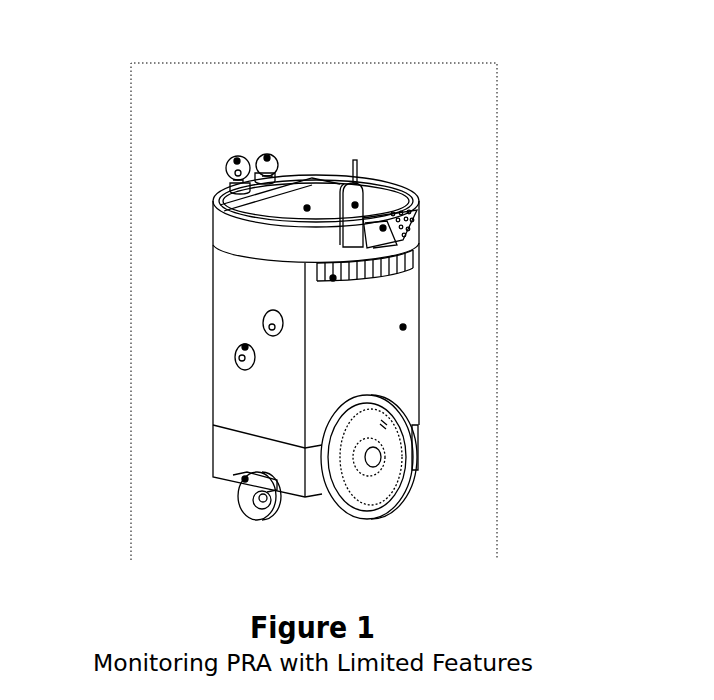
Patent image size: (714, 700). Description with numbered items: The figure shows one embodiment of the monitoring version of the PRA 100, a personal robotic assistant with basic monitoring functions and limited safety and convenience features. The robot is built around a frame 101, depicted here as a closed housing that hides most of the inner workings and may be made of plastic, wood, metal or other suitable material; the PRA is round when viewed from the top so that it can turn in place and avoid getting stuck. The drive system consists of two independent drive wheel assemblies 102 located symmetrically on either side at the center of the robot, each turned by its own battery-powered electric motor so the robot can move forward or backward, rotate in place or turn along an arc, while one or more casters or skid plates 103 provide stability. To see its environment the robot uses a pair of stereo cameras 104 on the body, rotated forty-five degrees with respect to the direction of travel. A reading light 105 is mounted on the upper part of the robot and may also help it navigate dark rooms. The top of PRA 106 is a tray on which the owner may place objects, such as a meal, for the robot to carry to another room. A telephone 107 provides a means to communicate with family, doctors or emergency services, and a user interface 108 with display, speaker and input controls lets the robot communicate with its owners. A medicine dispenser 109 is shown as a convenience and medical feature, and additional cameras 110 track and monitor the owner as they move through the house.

The PRA 100 is at (290, 281).
The frame 101 is at (403, 327).
The drive wheel assemblies 102 is at (442, 493).
The casters or skid plates 103 is at (245, 479).
The stereo cameras 104 is at (245, 347).
The reading light 105 is at (267, 158).
The top of PRA 106 is at (307, 208).
The telephone 107 is at (355, 205).
The user interface 108 is at (383, 228).
The medicine dispenser 109 is at (333, 278).
The additional cameras 110 is at (237, 161).